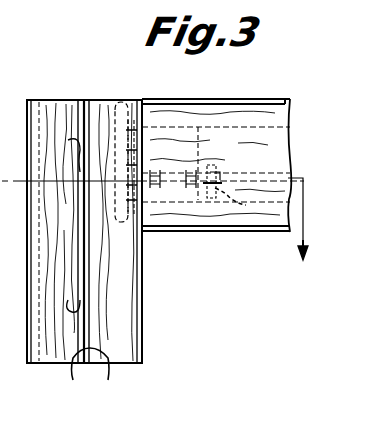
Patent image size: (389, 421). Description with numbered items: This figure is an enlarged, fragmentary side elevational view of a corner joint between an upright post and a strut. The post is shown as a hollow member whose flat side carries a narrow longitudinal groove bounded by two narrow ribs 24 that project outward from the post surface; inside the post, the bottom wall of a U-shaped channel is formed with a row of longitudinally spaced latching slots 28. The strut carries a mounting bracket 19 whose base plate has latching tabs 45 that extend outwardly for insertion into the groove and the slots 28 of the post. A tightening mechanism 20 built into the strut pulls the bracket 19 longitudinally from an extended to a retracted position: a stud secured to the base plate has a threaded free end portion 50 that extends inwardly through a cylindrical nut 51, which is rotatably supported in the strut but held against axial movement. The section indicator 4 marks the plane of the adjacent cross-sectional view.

The section line of FIG. 4 is at (297, 237).
The mounting bracket 19 is at (172, 126).
The tightening mechanism 20 is at (288, 215).
The rib 24 is at (166, 309).
The slot 28 is at (67, 272).
The tab 45 is at (124, 90).
The threaded free end portion 50 is at (224, 179).
The cylindrical nut 51 is at (226, 144).